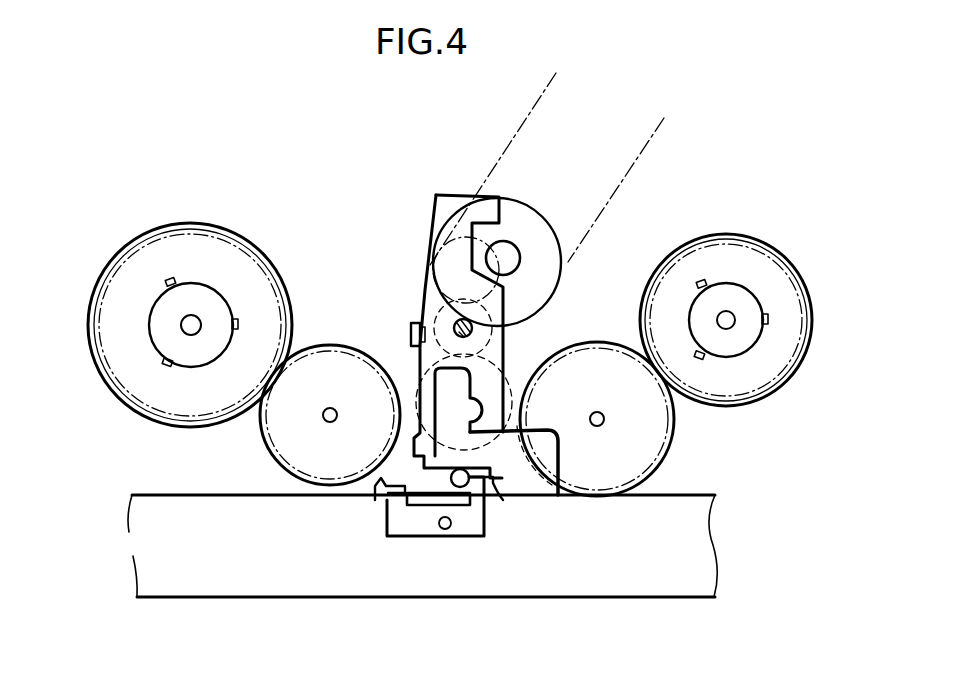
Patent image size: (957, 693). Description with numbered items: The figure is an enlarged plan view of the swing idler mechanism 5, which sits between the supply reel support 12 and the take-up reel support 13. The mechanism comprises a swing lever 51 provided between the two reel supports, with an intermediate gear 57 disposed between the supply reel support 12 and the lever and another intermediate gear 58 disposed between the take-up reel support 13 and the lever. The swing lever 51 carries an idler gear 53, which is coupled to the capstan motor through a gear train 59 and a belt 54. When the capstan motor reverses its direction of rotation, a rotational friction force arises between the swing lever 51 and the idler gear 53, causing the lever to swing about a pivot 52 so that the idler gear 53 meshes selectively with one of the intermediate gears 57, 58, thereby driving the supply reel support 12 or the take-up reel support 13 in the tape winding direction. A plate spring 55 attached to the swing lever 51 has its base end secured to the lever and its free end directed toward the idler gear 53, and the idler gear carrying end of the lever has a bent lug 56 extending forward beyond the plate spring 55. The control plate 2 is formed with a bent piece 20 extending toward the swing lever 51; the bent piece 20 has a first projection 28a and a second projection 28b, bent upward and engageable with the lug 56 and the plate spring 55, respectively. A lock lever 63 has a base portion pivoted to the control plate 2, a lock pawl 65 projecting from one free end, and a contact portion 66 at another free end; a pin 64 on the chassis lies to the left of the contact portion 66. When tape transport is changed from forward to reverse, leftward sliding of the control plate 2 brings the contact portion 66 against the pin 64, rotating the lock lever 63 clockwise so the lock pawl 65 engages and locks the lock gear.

The control plate 2 is at (685, 570).
The swing idler mechanism 5 is at (514, 341).
The supply reel support 12 is at (152, 380).
The take-up reel support 13 is at (762, 374).
The bent piece 20 is at (543, 455).
The first projection 28a is at (418, 466).
The second projection 28b is at (471, 474).
The swing lever 51 is at (487, 417).
The pivot 52 is at (521, 256).
The idler gear 53 is at (405, 417).
The belt 54 is at (507, 147).
The plate spring 55 is at (412, 330).
The lug 56 is at (398, 486).
The intermediate gear 57 is at (318, 464).
The intermediate gear 58 is at (627, 458).
The gear train 59 is at (428, 225).
The lock lever 63 is at (425, 525).
The pin 64 is at (438, 377).
The lock pawl 65 is at (375, 488).
The contact portion 66 is at (470, 488).